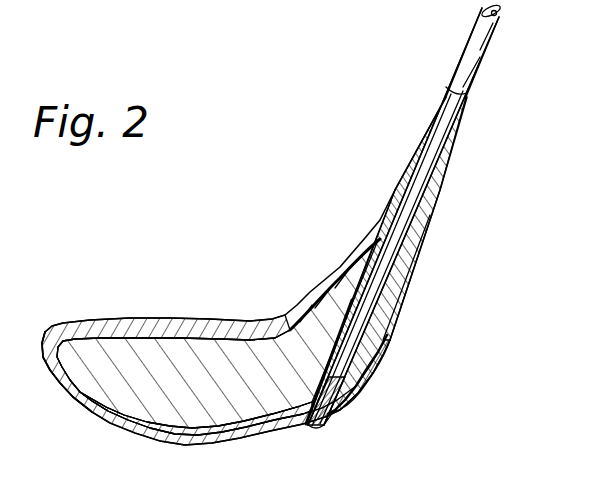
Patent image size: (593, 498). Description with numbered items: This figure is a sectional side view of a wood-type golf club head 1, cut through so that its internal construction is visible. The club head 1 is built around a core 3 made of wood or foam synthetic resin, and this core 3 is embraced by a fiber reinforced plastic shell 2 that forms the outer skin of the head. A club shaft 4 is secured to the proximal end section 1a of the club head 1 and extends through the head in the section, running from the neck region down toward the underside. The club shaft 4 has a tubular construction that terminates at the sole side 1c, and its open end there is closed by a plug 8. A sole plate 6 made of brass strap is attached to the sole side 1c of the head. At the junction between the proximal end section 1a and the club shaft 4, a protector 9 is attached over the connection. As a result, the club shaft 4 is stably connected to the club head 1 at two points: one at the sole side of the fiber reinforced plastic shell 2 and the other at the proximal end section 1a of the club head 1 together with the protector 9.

The club head 1 is at (207, 313).
The proximal end section 1a is at (345, 266).
The sole side 1c is at (117, 432).
The fiber reinforced plastic shell 2 is at (131, 318).
The core 3 is at (168, 418).
The club shaft 4 is at (393, 274).
The sole plate 6 is at (205, 442).
The plug 8 is at (313, 426).
The protector 9 is at (437, 185).